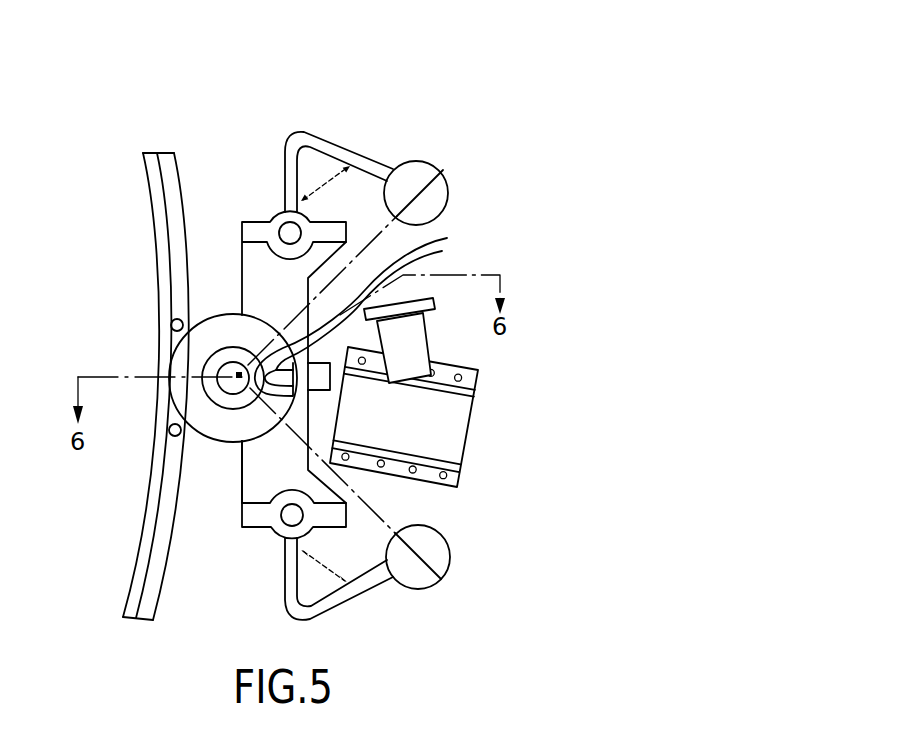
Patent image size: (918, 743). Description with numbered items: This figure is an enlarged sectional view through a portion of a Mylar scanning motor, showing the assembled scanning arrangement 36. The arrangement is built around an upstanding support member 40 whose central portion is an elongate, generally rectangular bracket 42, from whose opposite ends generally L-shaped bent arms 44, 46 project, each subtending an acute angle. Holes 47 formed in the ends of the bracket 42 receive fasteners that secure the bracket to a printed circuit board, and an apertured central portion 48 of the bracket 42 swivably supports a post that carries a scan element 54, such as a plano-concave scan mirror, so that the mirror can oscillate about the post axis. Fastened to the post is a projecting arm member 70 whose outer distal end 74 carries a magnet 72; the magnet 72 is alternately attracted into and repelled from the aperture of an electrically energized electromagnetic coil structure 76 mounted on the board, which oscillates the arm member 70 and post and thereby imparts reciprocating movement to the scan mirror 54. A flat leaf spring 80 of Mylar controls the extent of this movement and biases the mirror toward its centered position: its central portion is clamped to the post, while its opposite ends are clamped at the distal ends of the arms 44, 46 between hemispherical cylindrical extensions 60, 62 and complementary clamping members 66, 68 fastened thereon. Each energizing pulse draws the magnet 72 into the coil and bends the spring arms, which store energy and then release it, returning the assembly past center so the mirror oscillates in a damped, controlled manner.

The scanning arrangement 36 is at (488, 429).
The upstanding support member 40 is at (242, 488).
The elongate bracket 42 is at (242, 265).
The L-shaped bent arm 44 is at (318, 138).
The L-shaped bent arm 46 is at (285, 602).
The holes 47 is at (289, 228).
The apertured central portion 48 is at (238, 375).
The scan element 54 is at (130, 583).
The hemispherical cylindrical extension 60 is at (410, 589).
The hemispherical cylindrical extension 62 is at (413, 161).
The clamping member 66 is at (450, 548).
The clamping member 68 is at (446, 180).
The arm member 70 is at (447, 238).
The magnet 72 is at (433, 352).
The outer distal end 74 is at (434, 300).
The electromagnetic coil structure 76 is at (471, 398).
The leaf spring 80 is at (437, 227).